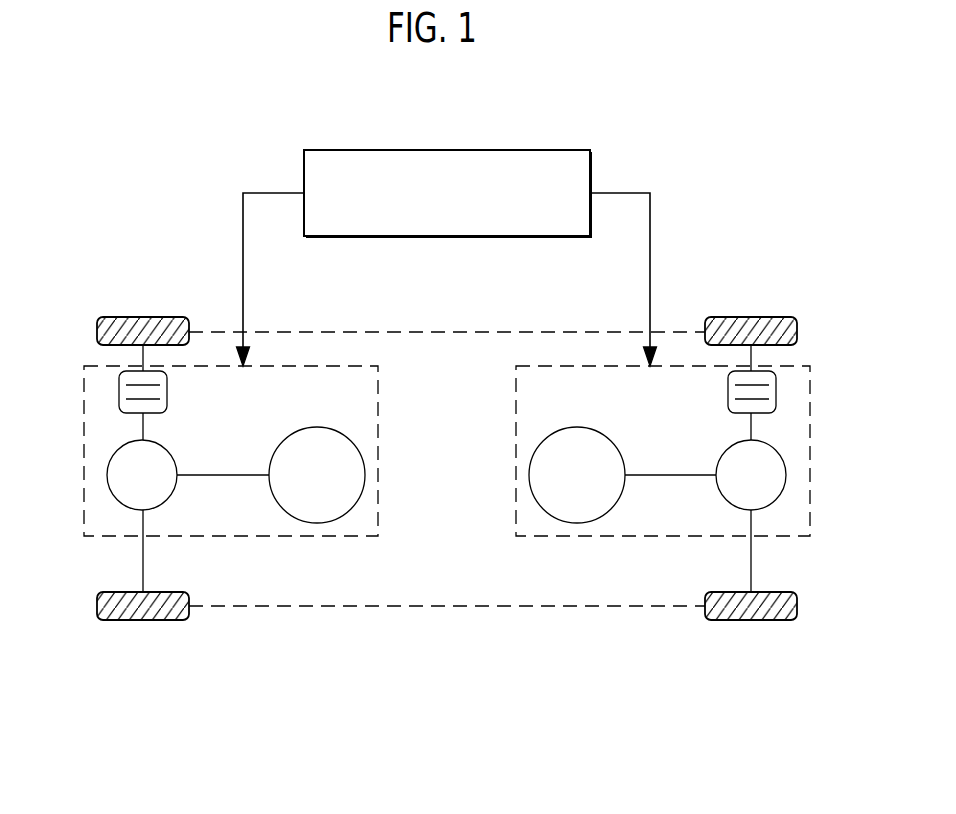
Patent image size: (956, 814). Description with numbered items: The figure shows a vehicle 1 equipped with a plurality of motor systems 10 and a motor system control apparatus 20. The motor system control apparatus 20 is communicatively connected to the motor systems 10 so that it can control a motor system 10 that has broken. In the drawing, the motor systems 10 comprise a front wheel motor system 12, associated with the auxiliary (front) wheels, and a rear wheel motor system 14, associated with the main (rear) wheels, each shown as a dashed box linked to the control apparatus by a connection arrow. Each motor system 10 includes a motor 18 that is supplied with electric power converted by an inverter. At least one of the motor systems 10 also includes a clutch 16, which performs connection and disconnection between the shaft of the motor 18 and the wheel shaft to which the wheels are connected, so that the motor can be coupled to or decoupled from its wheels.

The vehicle 1 is at (63, 105).
The motor system 10 is at (555, 708).
The front wheel motor system 12 is at (343, 537).
The rear wheel motor system 14 is at (552, 537).
The clutch 16 is at (119, 391).
The motor 18 is at (281, 437).
The motor system control apparatus 20 is at (547, 149).